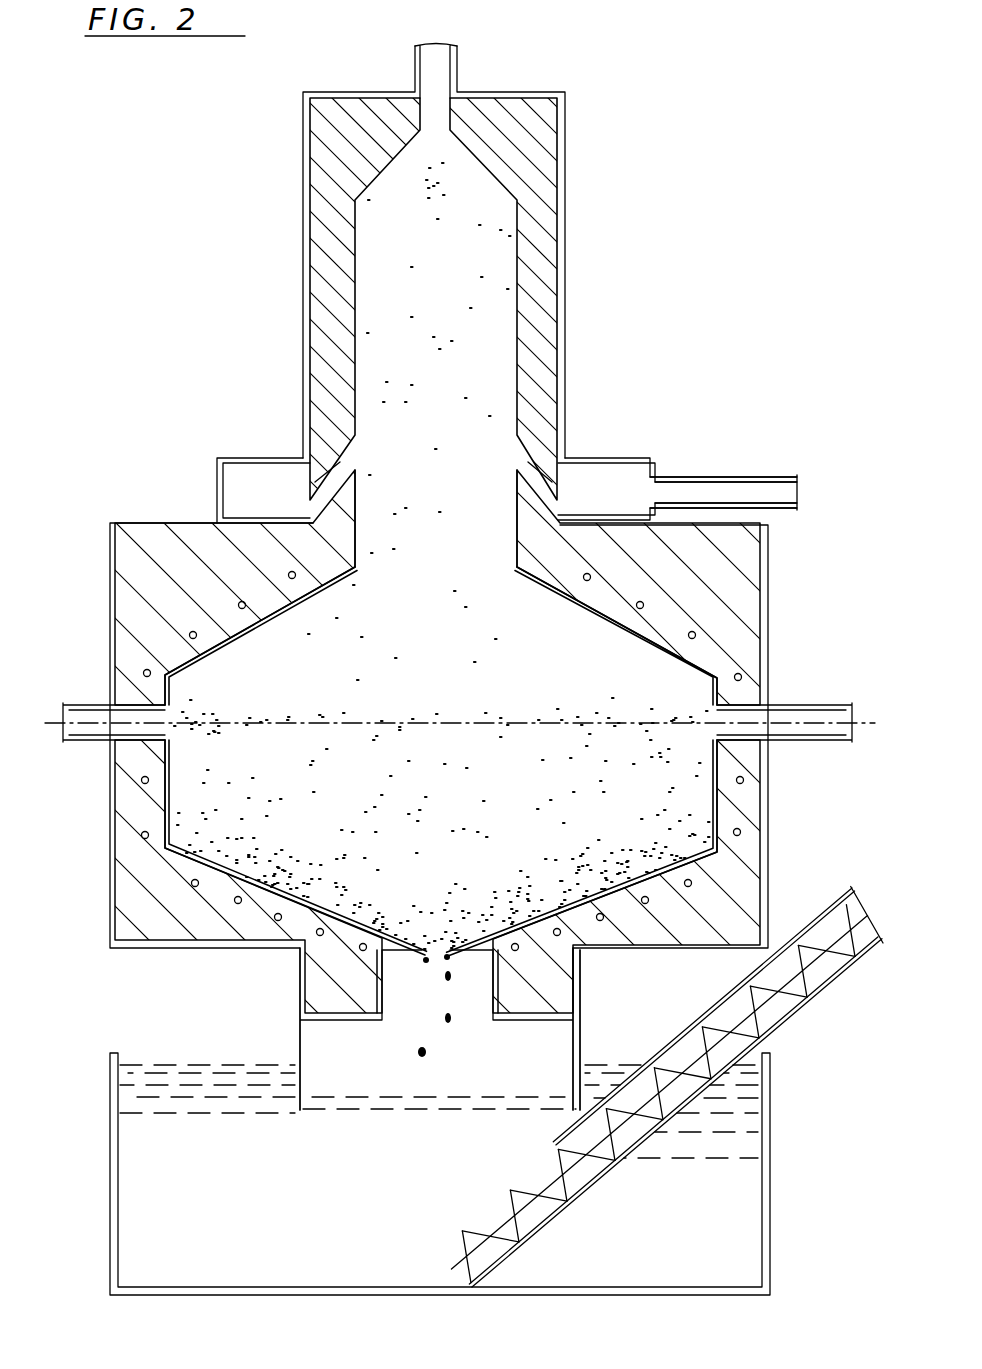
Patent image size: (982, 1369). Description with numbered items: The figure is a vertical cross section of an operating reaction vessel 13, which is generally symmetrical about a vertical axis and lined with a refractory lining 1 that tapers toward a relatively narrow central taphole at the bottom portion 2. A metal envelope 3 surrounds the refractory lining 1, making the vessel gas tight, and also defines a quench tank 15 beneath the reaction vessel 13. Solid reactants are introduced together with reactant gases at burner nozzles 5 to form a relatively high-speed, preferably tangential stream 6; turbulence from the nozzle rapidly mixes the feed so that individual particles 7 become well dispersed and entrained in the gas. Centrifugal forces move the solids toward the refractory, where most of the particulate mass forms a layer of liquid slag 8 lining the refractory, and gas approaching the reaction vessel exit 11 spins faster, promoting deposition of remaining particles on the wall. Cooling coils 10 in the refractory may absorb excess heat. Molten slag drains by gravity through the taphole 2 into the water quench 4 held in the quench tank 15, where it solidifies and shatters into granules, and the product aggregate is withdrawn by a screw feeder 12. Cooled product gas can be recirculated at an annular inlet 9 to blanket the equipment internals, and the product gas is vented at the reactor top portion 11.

The refractory lining 1 is at (538, 333).
The bottom portion 2 is at (422, 958).
The metal envelope 3 is at (566, 372).
The water quench 4 is at (740, 1182).
The burner nozzles 5 is at (800, 745).
The high-speed stream 6 is at (648, 704).
The individual particles 7 is at (435, 560).
The layer of liquid slag 8 is at (335, 908).
The annular inlet 9 is at (693, 476).
The cooling coils 10 is at (195, 888).
The reaction vessel exit 11 is at (440, 150).
The screw feeder 12 is at (852, 975).
The reaction vessel 13 is at (470, 810).
The quench tank 15 is at (360, 1059).